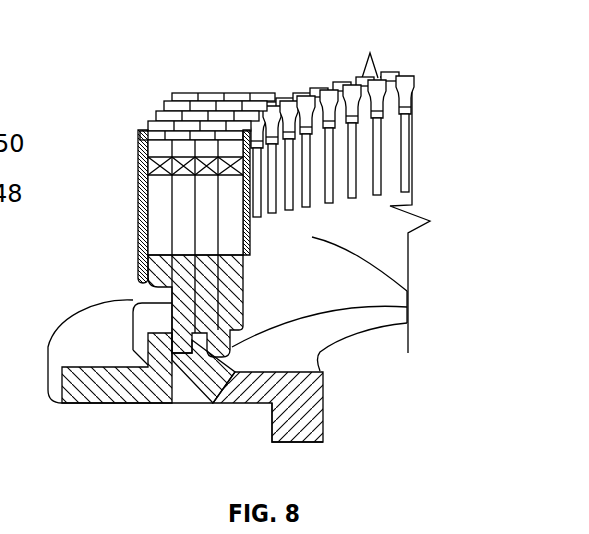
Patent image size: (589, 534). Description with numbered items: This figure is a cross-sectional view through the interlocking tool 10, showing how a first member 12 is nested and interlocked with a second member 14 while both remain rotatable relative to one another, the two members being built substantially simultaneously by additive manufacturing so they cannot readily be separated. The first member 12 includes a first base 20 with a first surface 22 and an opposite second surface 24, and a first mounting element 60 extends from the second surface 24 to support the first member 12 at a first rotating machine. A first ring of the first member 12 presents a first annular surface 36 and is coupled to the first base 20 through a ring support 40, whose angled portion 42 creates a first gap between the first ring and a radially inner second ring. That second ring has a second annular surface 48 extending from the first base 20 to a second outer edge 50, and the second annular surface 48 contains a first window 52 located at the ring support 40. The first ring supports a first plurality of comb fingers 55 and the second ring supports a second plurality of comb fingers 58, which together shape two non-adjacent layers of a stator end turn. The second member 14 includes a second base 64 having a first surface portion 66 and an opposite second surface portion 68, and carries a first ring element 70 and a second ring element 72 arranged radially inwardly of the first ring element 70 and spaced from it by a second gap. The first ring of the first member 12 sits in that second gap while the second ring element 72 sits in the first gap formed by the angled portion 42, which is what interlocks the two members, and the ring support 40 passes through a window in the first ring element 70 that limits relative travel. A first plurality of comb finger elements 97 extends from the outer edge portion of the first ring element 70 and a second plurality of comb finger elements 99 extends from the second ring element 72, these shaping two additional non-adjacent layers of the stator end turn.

The interlocking tool 10 is at (404, 23).
The first member 12 is at (416, 193).
The second member 14 is at (121, 131).
The first base 20 is at (373, 350).
The first surface 22 is at (297, 347).
The second surface 24 is at (250, 405).
The first annular surface 36 is at (165, 302).
The ring support 40 is at (193, 383).
The angled portion 42 is at (220, 378).
The second annular surface 48 is at (407, 293).
The second outer edge 50 is at (352, 195).
The first window 52 is at (232, 347).
The first plurality of comb fingers 55 is at (168, 178).
The second plurality of comb fingers 58 is at (395, 112).
The first mounting element 60 is at (312, 417).
The second base 64 is at (82, 385).
The first surface portion 66 is at (76, 338).
The second surface portion 68 is at (117, 405).
The first ring element 70 is at (435, 314).
The second ring element 72 is at (449, 322).
The first plurality of comb finger elements 97 is at (166, 102).
The second plurality of comb finger elements 99 is at (208, 145).